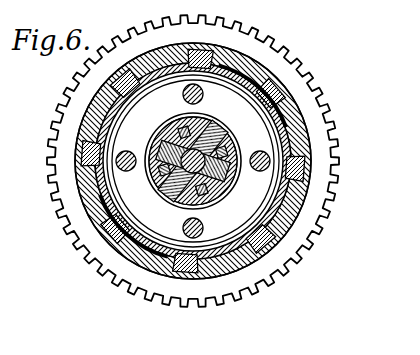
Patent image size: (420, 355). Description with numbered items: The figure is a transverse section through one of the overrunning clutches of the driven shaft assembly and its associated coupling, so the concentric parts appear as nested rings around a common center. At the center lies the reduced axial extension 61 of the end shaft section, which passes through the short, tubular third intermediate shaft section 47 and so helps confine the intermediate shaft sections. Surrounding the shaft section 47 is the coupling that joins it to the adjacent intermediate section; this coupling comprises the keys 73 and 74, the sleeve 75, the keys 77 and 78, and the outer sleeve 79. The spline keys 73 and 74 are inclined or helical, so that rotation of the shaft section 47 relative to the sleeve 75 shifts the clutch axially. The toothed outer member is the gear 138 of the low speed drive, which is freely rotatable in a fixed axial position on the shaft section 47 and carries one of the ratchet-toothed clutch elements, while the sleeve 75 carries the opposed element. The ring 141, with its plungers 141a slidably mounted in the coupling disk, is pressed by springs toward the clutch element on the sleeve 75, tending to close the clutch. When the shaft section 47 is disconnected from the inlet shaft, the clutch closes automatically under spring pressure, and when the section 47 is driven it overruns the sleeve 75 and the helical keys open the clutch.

The gear 138 is at (243, 32).
The ring 141 is at (225, 100).
The plungers 141a is at (268, 156).
The key 74 is at (205, 126).
The sleeve 75 is at (229, 143).
The reduced axial extension 61 is at (172, 170).
The third intermediate shaft section 47 is at (175, 196).
The key 73 is at (228, 181).
The key 77 is at (188, 278).
The key 78 is at (250, 242).
The sleeve 79 is at (288, 236).